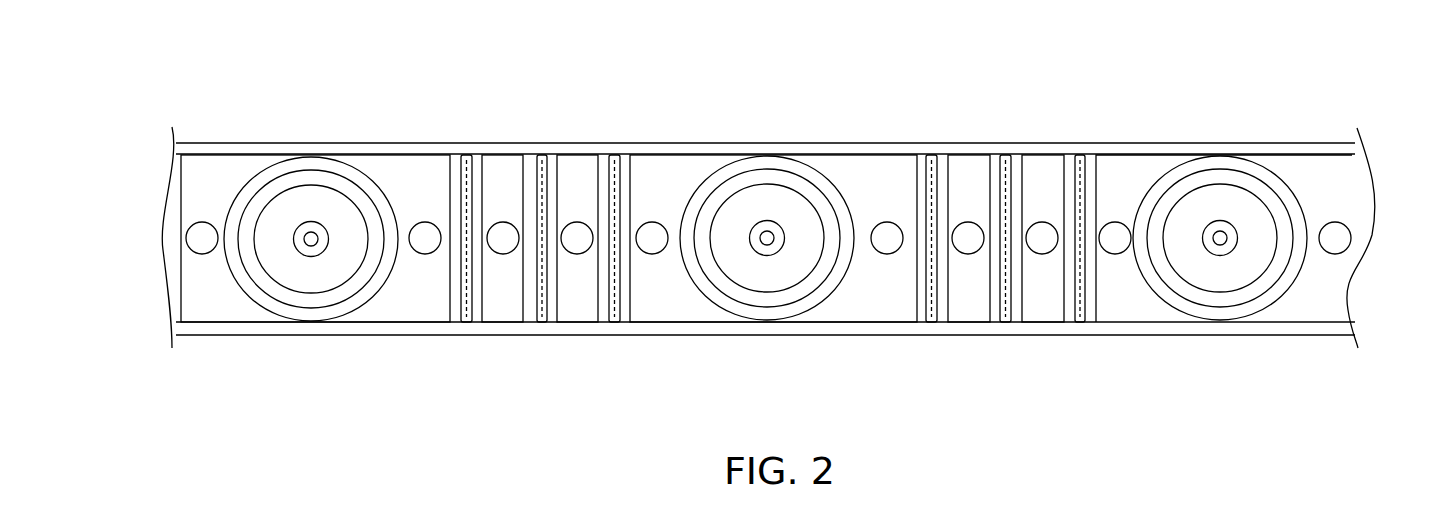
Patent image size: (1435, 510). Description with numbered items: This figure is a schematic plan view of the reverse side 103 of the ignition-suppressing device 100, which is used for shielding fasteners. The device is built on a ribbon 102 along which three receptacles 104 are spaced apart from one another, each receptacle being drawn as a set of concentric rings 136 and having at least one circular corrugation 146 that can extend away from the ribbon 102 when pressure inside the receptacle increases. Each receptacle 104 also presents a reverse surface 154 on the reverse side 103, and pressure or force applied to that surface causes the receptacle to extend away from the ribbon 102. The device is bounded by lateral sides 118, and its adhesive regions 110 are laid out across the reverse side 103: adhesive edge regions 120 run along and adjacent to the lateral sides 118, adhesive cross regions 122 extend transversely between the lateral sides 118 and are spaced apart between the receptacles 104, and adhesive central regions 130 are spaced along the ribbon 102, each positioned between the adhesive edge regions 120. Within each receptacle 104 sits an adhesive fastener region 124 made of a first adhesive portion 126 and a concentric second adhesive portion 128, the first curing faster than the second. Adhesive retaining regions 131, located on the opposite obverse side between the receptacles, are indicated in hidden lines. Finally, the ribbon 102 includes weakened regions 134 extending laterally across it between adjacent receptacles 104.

The ignition-suppressing device 100 is at (1254, 58).
The ribbon 102 is at (1363, 96).
The reverse side 103 is at (1303, 96).
The receptacles 104 is at (352, 159).
The adhesive regions 110 is at (1006, 60).
The lateral sides 118 is at (1126, 143).
The adhesive edge regions 120 is at (200, 143).
The adhesive cross regions 122 is at (453, 295).
The adhesive fastener regions 124 is at (311, 218).
The first adhesive portion 126 is at (300, 246).
The second adhesive portion 128 is at (333, 248).
The adhesive central regions 130 is at (202, 221).
The adhesive retaining regions 131 is at (478, 257).
The weakened region 134 is at (466, 170).
The concentric rings 136 is at (515, 75).
The circular corrugation 146 is at (328, 297).
The reverse surface 154 is at (359, 234).